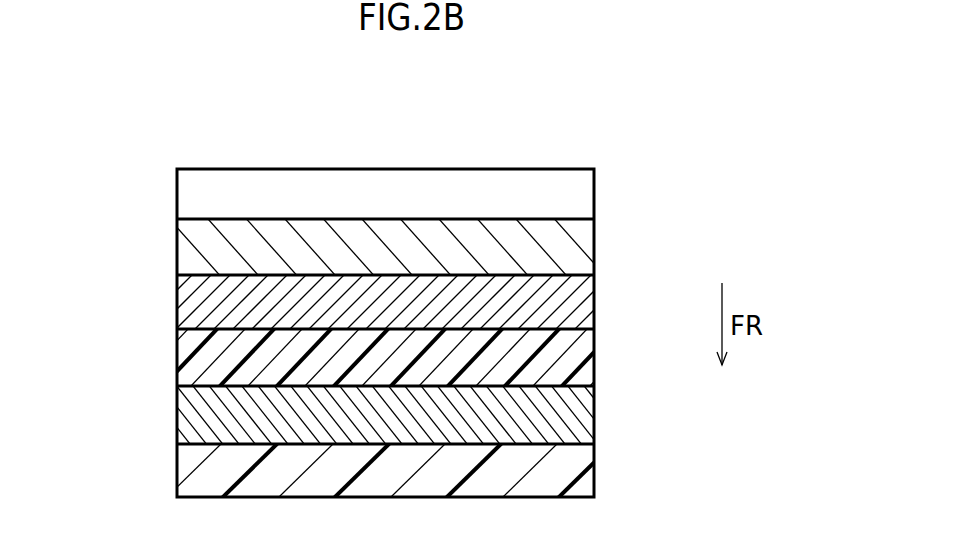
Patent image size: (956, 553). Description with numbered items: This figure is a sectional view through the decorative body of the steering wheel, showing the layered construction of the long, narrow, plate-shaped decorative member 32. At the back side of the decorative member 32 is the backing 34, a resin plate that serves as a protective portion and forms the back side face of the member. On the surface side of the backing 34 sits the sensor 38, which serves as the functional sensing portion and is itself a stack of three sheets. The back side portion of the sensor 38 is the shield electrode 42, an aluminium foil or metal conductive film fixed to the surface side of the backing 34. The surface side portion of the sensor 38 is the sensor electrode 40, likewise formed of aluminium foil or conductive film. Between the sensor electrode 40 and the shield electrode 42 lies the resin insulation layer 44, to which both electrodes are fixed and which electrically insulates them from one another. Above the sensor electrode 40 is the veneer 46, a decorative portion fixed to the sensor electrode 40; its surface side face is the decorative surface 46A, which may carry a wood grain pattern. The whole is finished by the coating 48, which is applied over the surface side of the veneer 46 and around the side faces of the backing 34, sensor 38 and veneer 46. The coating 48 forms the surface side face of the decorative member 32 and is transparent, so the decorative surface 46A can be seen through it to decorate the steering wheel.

The decorative member 32 is at (260, 137).
The backing 34 is at (594, 472).
The sensor 38 is at (168, 440).
The sensor electrode 40 is at (594, 306).
The shield electrode 42 is at (594, 419).
The insulation layer 44 is at (594, 357).
The veneer 46 is at (594, 246).
The decorative surface 46A is at (217, 219).
The coating 48 is at (594, 192).